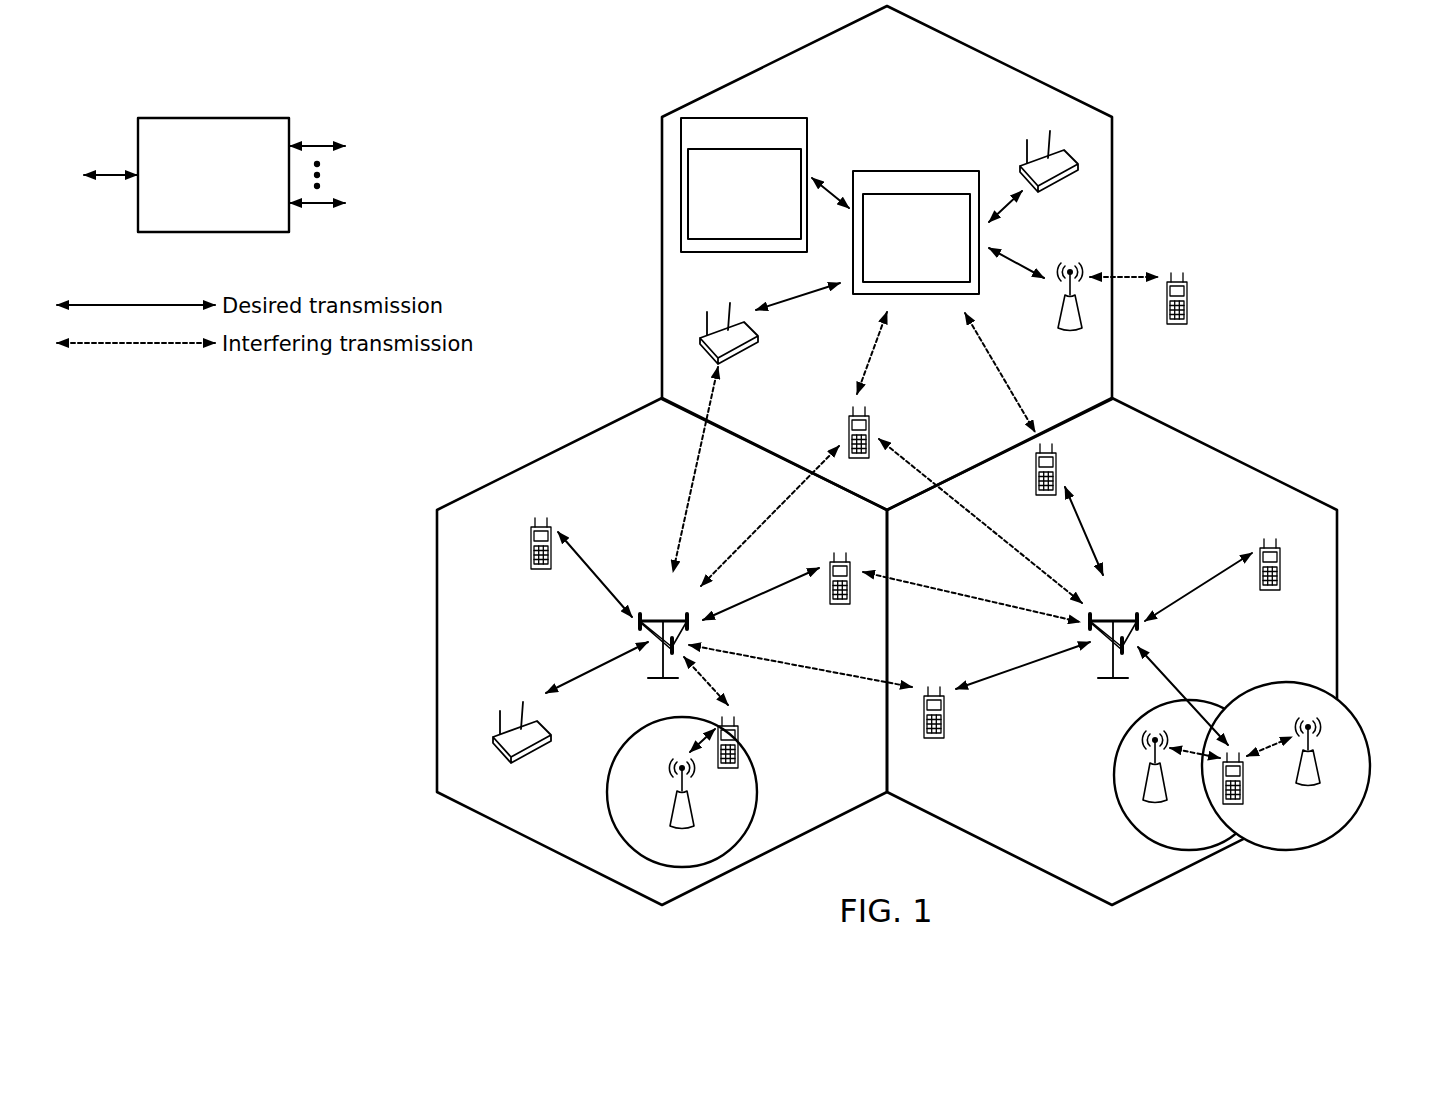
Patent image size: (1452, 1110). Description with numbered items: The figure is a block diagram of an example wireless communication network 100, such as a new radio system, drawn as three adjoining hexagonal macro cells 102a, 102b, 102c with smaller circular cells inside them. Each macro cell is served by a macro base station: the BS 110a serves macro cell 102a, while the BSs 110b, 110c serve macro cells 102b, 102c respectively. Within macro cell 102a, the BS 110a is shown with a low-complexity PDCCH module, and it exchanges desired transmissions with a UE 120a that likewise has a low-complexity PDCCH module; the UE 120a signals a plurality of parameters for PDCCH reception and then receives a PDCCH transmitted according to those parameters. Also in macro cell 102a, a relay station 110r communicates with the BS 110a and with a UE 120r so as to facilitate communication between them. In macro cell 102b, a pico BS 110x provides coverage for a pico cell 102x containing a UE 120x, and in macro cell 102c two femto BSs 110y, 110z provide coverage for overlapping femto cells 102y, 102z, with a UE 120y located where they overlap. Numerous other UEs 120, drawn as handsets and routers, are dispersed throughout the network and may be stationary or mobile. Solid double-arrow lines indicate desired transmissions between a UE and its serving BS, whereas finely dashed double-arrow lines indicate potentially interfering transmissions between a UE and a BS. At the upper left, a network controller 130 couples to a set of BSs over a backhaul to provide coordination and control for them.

The wireless communication network 100 is at (1266, 77).
The macro cell 102a is at (998, 57).
The macro cell 102b is at (548, 450).
The macro cell 102c is at (1225, 451).
The pico cell 102x is at (631, 736).
The femto cell 102y is at (1121, 740).
The femto cell 102z is at (1282, 681).
The base station 110a is at (949, 170).
The base station 110b is at (658, 619).
The base station 110c is at (1108, 619).
The relay station 110r is at (1058, 321).
The pico base station 110x is at (694, 816).
The femto base station 110y is at (1165, 790).
The femto base station 110z is at (1318, 778).
The user equipment 120 is at (1053, 152).
The user equipment with low-complexity PDCCH module 120a is at (794, 117).
The user equipment 120r is at (1188, 316).
The user equipment 120x is at (739, 737).
The user equipment 120y is at (1222, 800).
The network controller 130 is at (205, 118).